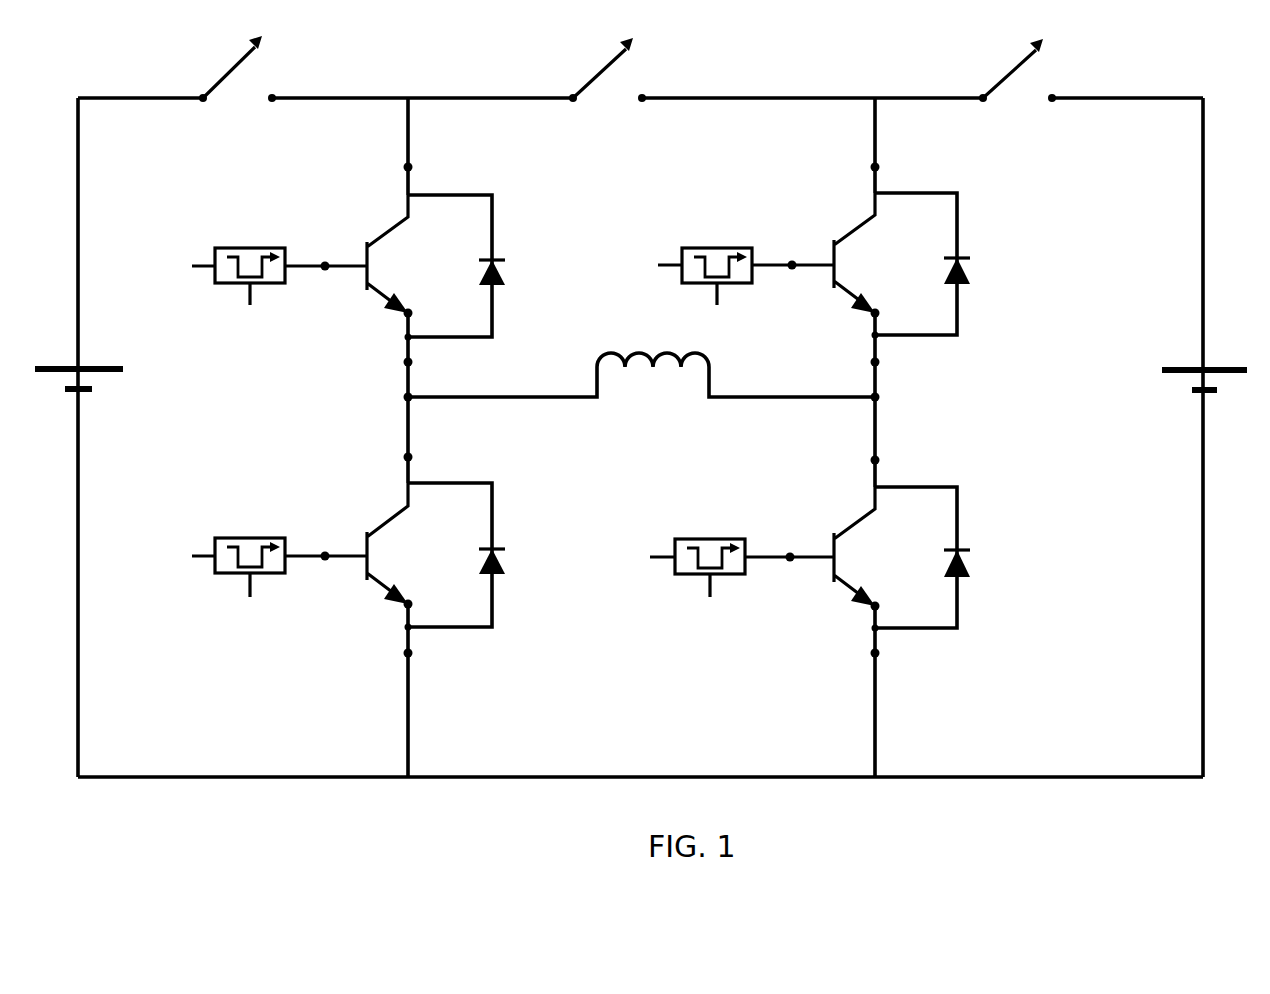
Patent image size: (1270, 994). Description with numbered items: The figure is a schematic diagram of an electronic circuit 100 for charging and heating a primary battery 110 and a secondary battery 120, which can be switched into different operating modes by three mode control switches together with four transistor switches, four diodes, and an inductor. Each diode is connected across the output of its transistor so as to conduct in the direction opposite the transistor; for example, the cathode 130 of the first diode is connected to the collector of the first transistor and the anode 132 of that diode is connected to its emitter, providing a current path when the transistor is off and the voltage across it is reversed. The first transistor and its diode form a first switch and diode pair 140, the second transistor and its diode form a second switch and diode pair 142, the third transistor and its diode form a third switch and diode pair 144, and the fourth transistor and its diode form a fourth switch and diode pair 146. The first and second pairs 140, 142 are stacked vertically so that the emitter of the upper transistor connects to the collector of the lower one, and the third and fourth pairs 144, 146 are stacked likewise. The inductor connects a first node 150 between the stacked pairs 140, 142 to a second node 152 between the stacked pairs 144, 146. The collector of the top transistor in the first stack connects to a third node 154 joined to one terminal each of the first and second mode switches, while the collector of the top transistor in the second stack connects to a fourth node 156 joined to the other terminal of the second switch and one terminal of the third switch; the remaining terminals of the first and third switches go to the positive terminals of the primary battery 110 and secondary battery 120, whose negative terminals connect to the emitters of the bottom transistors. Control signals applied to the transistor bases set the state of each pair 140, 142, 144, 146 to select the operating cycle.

The electronic circuit 100 is at (744, 66).
The primary battery 110 is at (114, 437).
The secondary battery 120 is at (1172, 332).
The cathode of diode D1 130 is at (504, 227).
The anode of diode D1 132 is at (506, 294).
The first switch and diode pair 140 is at (381, 318).
The second switch and diode pair 142 is at (365, 591).
The third switch and diode pair 144 is at (842, 306).
The fourth switch and diode pair 146 is at (842, 616).
The first node 150 is at (388, 386).
The second node 152 is at (892, 393).
The third node 154 is at (394, 120).
The fourth node 156 is at (860, 120).